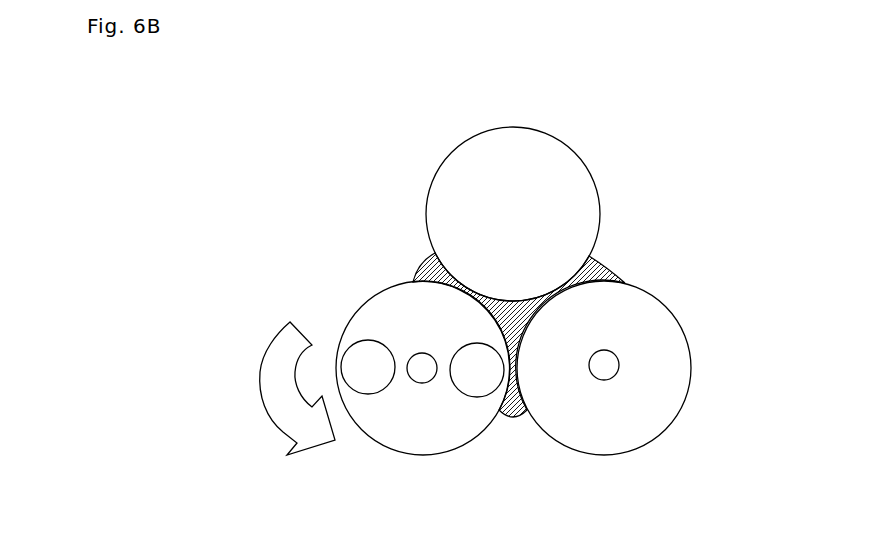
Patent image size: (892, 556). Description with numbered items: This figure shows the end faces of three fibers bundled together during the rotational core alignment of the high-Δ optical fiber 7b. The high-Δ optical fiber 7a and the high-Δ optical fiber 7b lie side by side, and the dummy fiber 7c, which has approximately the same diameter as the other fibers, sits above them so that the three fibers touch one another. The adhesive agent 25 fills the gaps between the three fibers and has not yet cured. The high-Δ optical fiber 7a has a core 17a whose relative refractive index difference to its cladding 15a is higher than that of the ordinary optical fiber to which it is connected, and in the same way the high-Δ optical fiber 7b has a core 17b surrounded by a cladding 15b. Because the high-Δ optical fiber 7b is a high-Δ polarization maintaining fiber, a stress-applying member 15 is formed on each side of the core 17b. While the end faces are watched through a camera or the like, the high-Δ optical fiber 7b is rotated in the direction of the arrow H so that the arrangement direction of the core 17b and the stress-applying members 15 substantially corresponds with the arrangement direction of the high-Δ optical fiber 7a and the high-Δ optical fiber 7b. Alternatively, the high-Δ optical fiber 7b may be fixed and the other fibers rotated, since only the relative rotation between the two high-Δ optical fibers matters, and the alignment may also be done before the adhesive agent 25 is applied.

The high-Δ optical fiber 7a is at (633, 303).
The high-Δ optical fiber 7b is at (488, 412).
The dummy fiber 7c is at (517, 147).
The stress-applying member 15 is at (465, 378).
The cladding 15a is at (630, 403).
The cladding 15b is at (344, 343).
The core 17a is at (610, 365).
The core 17b is at (425, 366).
The adhesive agent 25 is at (593, 262).
The arrow H is at (279, 388).